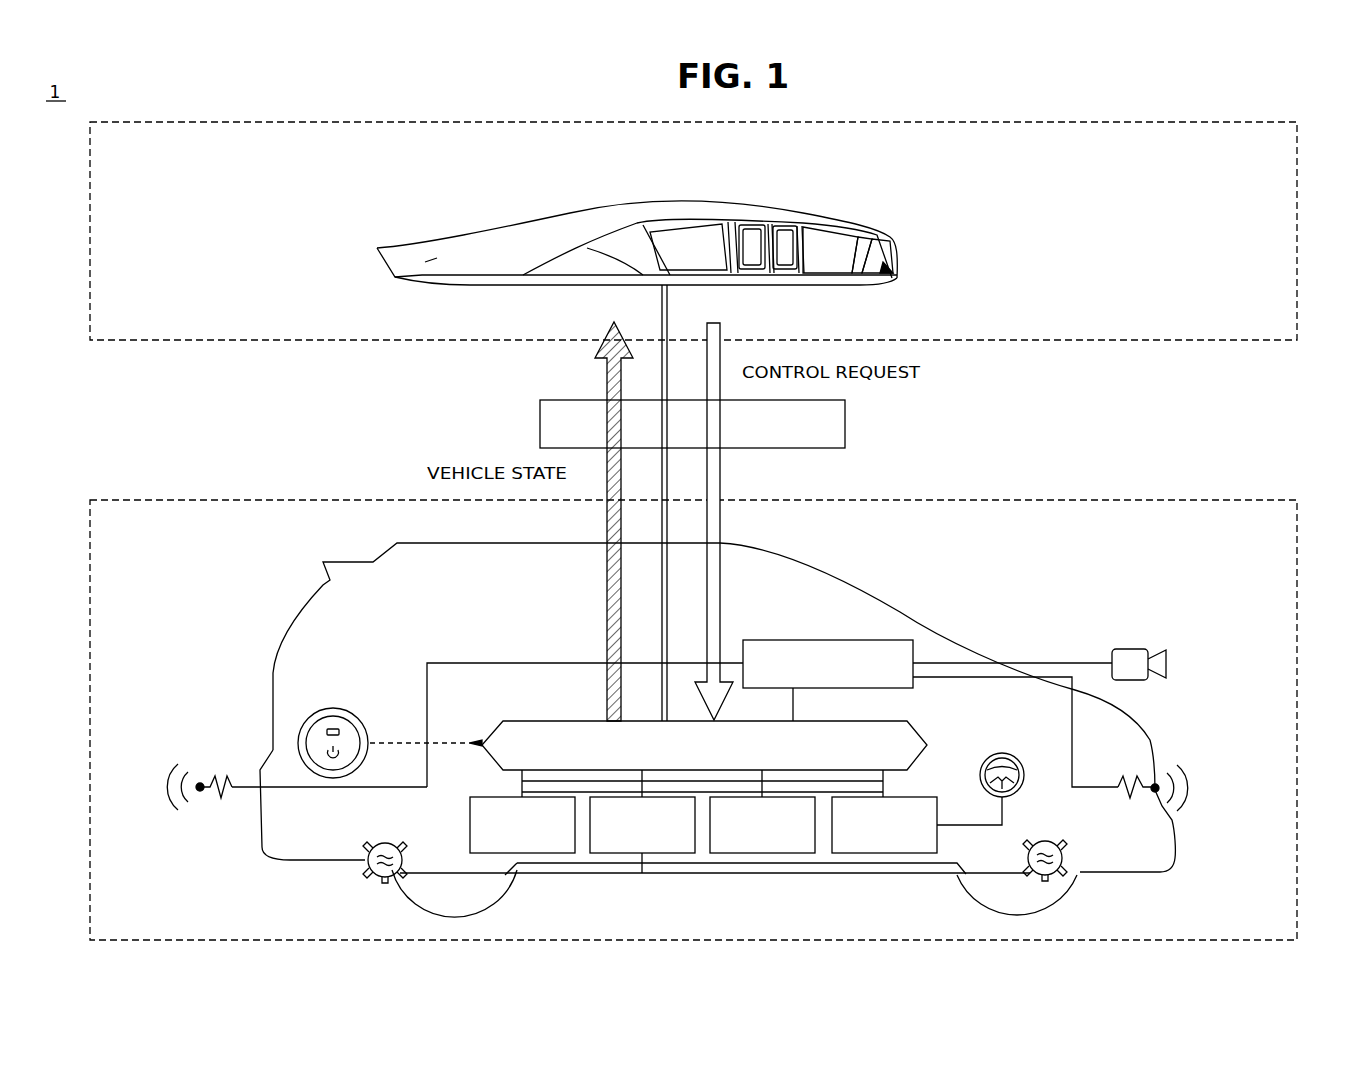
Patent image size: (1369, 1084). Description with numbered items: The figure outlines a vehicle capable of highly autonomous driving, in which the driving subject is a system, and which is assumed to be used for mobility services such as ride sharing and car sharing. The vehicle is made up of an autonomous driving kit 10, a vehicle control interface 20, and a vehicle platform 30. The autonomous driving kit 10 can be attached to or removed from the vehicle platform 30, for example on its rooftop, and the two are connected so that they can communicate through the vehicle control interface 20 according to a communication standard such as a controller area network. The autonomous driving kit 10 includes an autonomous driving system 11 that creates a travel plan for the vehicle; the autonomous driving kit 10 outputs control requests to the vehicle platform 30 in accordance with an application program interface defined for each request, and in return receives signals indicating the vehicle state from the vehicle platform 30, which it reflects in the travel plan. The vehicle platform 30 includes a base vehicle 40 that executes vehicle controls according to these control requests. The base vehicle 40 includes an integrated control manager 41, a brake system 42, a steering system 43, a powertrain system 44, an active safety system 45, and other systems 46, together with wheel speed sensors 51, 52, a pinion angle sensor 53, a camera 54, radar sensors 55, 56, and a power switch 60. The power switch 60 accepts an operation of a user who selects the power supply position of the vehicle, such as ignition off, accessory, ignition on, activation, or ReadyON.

The autonomous driving kit 10 is at (1297, 232).
The autonomous driving system 11 is at (813, 210).
The vehicle control interface 20 is at (845, 424).
The vehicle platform 30 is at (1297, 722).
The base vehicle 40 is at (302, 625).
The integrated control manager 41 is at (918, 737).
The brake system 42 is at (677, 854).
The steering system 43 is at (891, 854).
The powertrain system 44 is at (765, 854).
The active safety system 45 is at (905, 640).
The other systems 46 is at (548, 854).
The wheel speed sensor 51 is at (1062, 844).
The wheel speed sensor 52 is at (404, 845).
The pinion angle sensor 53 is at (1010, 757).
The camera 54 is at (1131, 648).
The radar sensor 55 is at (1160, 780).
The radar sensor 56 is at (202, 778).
The power switch 60 is at (364, 730).